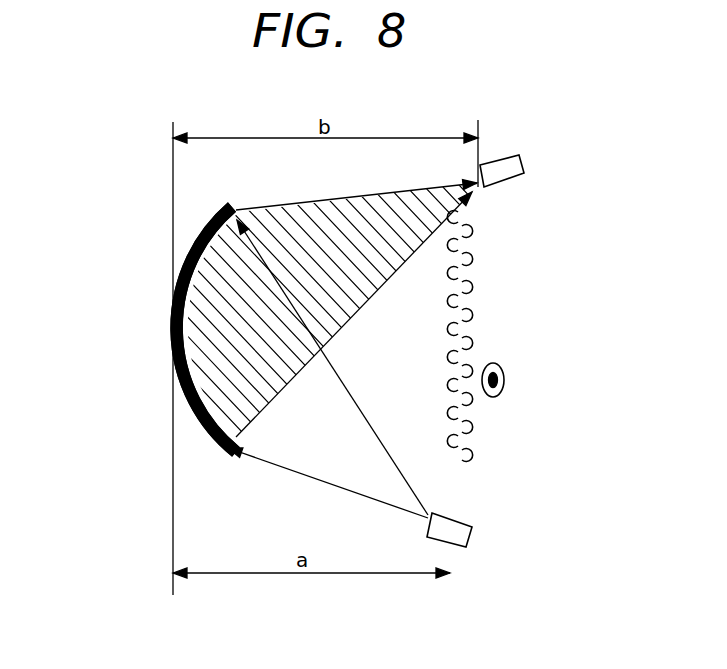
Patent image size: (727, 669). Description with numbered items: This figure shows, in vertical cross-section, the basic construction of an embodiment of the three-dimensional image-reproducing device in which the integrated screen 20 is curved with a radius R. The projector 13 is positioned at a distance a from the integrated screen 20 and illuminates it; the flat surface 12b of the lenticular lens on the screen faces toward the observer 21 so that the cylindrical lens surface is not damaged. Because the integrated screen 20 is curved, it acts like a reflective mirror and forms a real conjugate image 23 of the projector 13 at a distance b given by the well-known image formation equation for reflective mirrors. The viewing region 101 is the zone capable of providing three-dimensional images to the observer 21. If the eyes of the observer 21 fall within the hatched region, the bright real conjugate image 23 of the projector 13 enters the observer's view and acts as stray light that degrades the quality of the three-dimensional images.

The integrated screen 20 is at (173, 312).
The radius R is at (178, 374).
The flat surface 12b is at (203, 253).
The real conjugate image 23 is at (524, 167).
The projector 13 is at (468, 531).
The viewing region 101 is at (470, 266).
The observer 21 is at (505, 380).